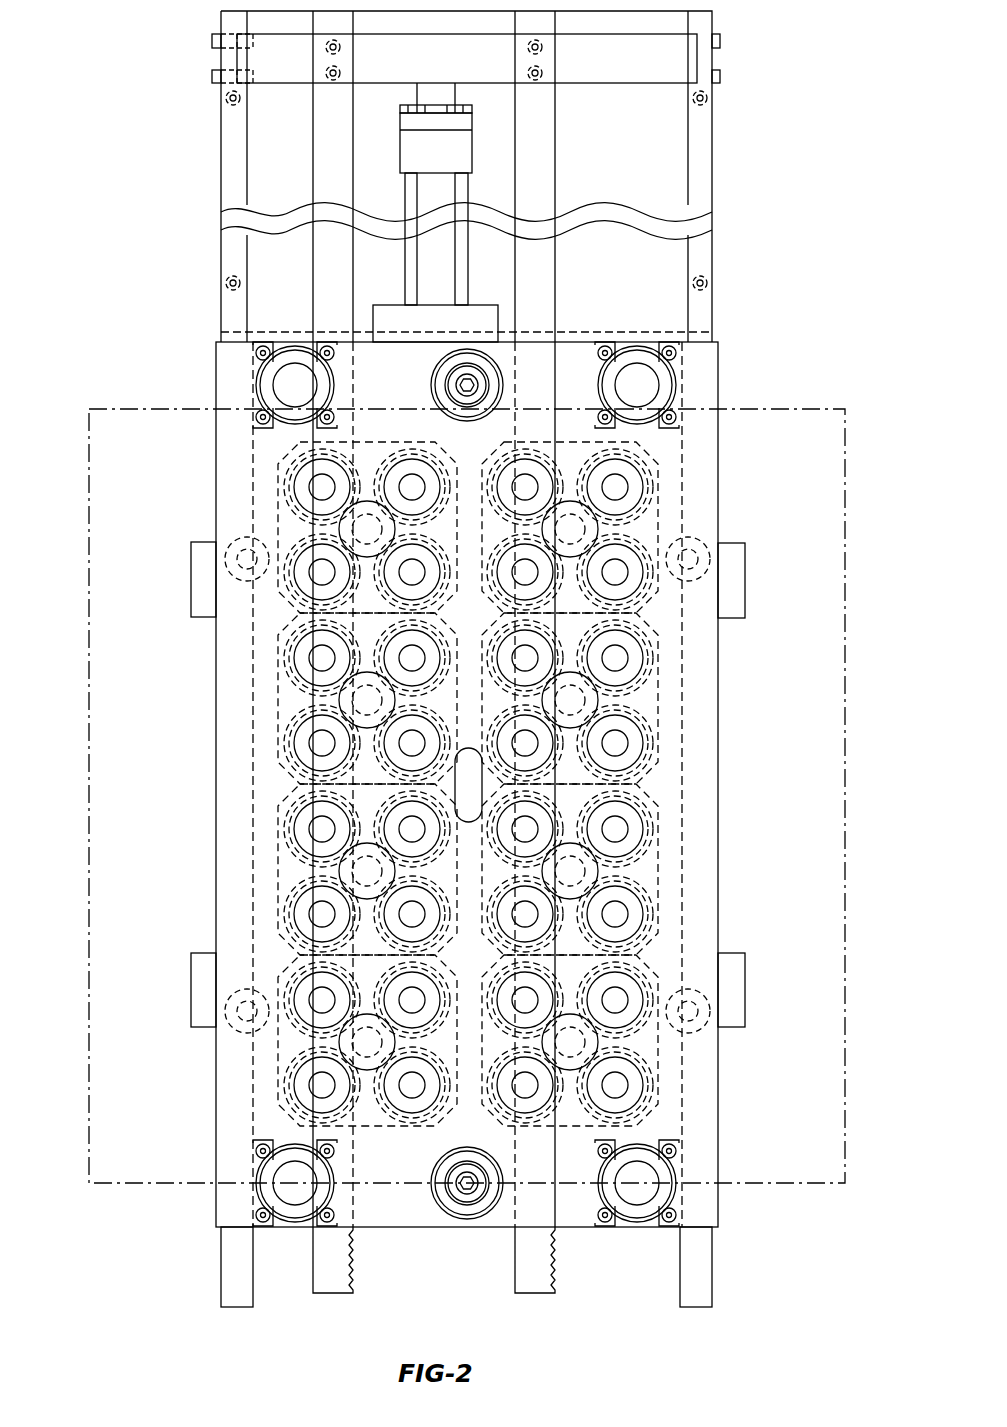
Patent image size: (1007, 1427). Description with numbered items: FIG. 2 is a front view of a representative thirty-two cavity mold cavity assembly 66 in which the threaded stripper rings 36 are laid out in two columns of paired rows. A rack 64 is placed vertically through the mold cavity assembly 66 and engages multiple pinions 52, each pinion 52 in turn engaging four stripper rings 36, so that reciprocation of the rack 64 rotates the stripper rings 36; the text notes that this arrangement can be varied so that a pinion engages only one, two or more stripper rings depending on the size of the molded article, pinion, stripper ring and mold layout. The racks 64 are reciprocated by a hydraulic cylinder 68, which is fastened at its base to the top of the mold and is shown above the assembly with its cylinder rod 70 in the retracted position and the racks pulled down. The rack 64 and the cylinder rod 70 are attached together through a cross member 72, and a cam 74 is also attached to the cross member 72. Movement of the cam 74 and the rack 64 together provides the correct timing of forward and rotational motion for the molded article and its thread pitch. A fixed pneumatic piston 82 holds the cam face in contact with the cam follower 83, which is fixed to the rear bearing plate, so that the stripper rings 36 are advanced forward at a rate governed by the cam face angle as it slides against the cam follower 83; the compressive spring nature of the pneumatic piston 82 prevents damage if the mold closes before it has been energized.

The stripper ring 36 is at (392, 983).
The pinion 52 is at (367, 527).
The rack 64 is at (530, 1262).
The mold cavity assembly 66 is at (205, 833).
The hydraulic cylinder 68 is at (445, 193).
The cylinder rod 70 is at (437, 93).
The cross member 72 is at (678, 55).
The cam 74 is at (700, 172).
The pneumatic piston 82 is at (695, 545).
The cam follower 83 is at (731, 572).